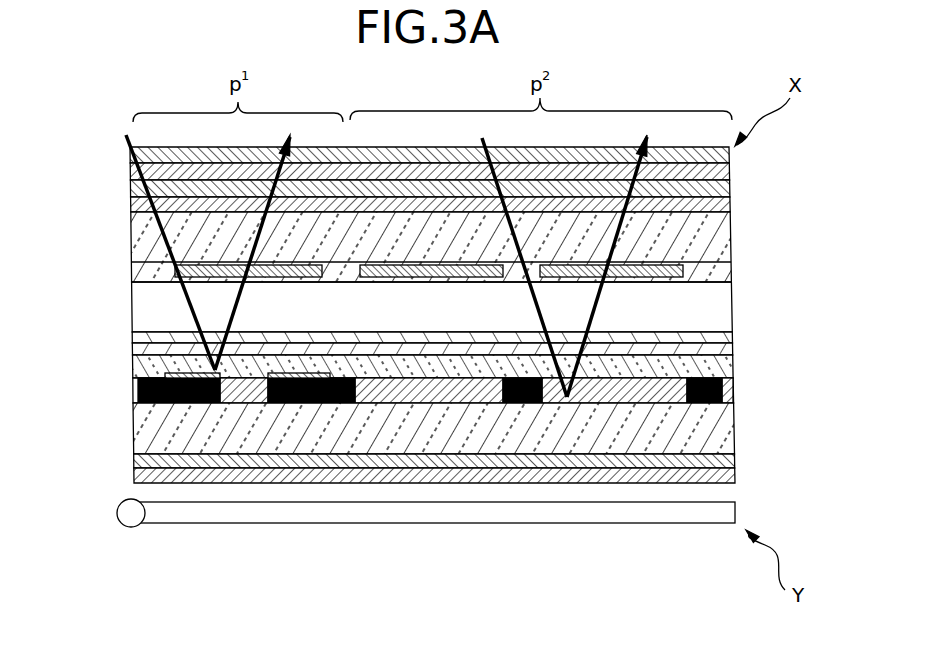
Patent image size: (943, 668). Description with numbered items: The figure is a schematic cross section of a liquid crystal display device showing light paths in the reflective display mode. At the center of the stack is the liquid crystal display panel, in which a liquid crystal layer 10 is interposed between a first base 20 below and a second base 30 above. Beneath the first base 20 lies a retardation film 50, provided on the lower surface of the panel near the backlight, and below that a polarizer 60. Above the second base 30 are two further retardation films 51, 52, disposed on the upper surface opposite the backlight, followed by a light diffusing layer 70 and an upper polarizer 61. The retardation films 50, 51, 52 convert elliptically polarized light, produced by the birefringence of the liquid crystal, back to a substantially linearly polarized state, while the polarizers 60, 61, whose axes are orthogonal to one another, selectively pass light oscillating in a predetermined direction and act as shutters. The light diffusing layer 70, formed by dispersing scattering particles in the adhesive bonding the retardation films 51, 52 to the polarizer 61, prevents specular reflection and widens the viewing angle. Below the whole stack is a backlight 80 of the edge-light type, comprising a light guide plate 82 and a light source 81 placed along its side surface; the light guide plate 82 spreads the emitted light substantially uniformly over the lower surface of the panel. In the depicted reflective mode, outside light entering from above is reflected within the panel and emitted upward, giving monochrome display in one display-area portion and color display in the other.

The liquid crystal layer 10 is at (725, 310).
The first base 20 is at (744, 332).
The second base 30 is at (742, 212).
The retardation film 50 is at (140, 460).
The retardation film 51 is at (130, 204).
The retardation film 52 is at (730, 183).
The polarizer 60 is at (733, 470).
The polarizer 61 is at (730, 150).
The light diffusing layer 70 is at (130, 167).
The backlight 80 is at (411, 567).
The light source 81 is at (126, 544).
The light guide plate 82 is at (192, 518).